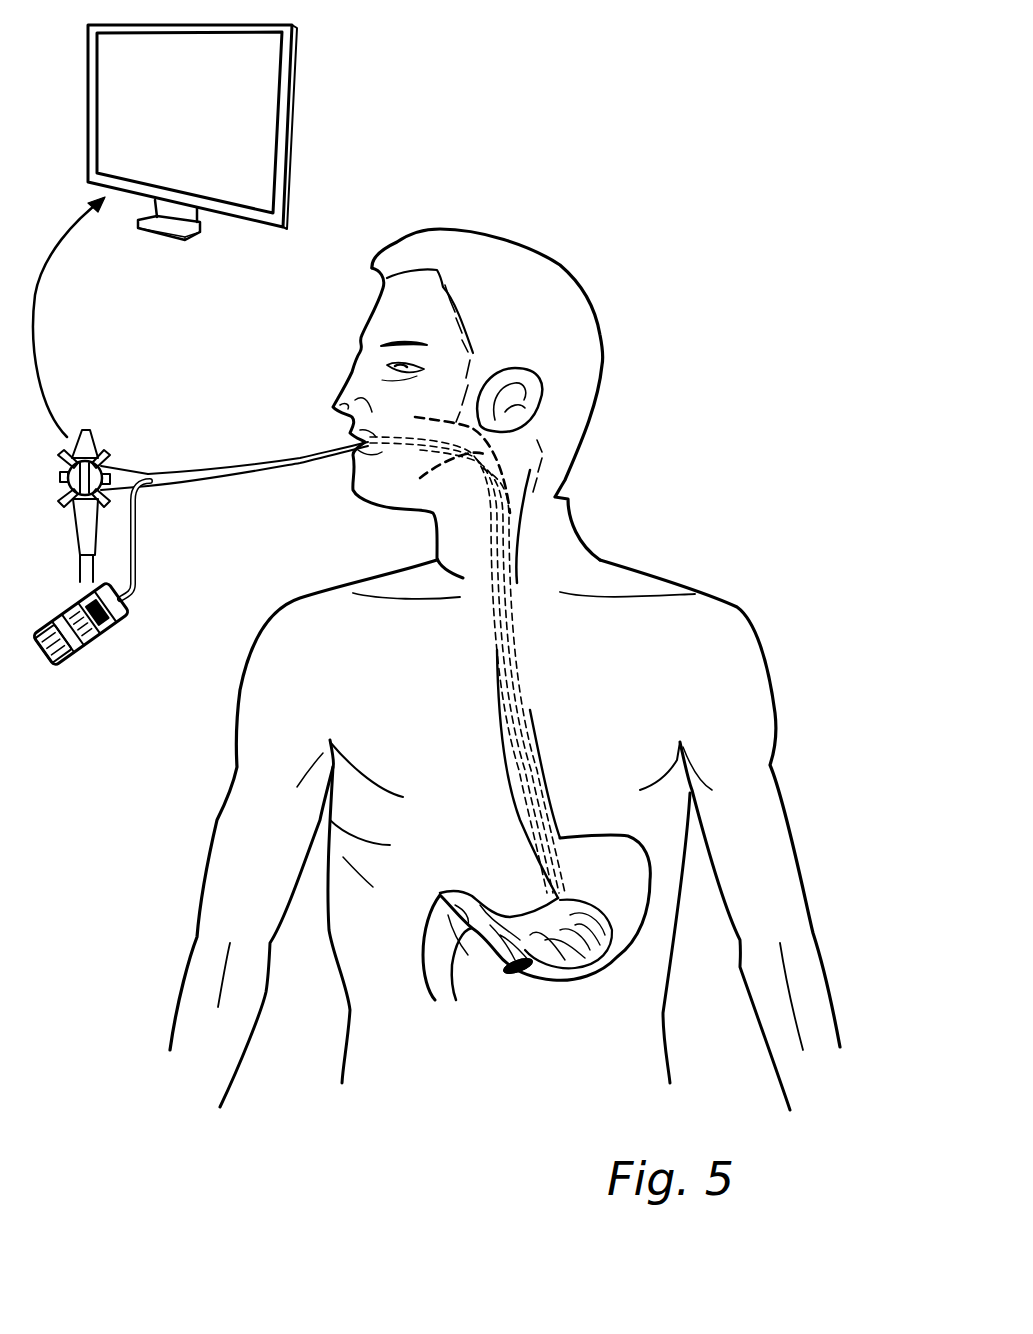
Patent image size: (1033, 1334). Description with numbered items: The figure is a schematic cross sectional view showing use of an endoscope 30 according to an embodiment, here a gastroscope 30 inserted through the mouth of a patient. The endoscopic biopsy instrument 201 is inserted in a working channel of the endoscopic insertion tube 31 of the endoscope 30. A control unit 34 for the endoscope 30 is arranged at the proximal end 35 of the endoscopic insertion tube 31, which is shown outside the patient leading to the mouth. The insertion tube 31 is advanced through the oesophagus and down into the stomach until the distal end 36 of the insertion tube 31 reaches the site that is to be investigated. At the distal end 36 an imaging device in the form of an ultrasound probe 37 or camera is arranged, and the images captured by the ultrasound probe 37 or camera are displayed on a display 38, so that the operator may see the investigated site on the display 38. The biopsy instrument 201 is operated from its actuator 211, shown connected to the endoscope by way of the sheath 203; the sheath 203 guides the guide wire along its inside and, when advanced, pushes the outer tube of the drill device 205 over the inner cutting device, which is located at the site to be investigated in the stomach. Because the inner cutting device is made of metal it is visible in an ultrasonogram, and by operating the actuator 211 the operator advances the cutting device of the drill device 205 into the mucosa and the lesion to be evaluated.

The endoscope 30 is at (98, 383).
The endoscopic insertion tube 31 is at (600, 560).
The control unit 34 is at (98, 457).
The proximal end 35 is at (163, 477).
The distal end 36 is at (540, 953).
The ultrasound probe 37 is at (510, 917).
The display 38 is at (293, 90).
The endoscopic biopsy instrument 201 is at (86, 680).
The sheath 203 is at (137, 550).
The drill device 205 is at (537, 978).
The actuator 211 is at (118, 627).